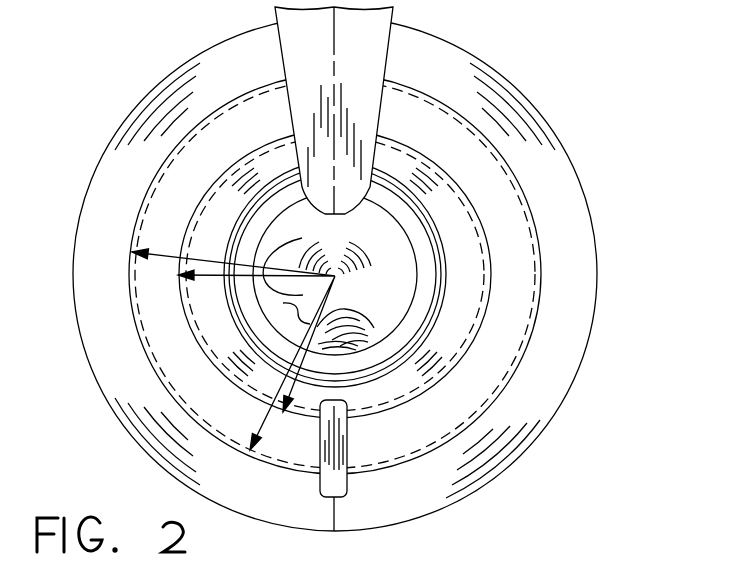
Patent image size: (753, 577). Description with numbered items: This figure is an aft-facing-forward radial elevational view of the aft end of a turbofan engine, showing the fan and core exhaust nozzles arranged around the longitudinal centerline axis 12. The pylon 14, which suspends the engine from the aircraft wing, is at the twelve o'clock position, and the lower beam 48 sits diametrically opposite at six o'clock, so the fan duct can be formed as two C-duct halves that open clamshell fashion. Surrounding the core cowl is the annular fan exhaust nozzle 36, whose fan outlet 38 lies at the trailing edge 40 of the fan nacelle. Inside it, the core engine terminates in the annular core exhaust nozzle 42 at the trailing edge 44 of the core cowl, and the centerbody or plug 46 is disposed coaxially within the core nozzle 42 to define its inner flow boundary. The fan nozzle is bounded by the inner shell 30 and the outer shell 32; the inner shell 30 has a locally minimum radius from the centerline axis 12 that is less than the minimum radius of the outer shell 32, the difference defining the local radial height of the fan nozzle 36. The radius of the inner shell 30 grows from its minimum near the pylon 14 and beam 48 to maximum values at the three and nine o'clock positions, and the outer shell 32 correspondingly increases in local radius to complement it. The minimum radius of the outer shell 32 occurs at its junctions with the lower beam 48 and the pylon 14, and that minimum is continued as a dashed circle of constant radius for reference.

The centerline axis 12 is at (334, 272).
The pylon 14 is at (334, 110).
The inner shell 30 is at (355, 274).
The outer shell 32 is at (335, 274).
The fan exhaust nozzle 36 is at (500, 240).
The fan outlet 38 is at (335, 130).
The trailing edge of the fan nacelle 40 is at (418, 96).
The core exhaust nozzle 42 is at (408, 327).
The trailing edge of the core cowl 44 is at (290, 191).
The centerbody or plug 46 is at (335, 274).
The lower beam 48 is at (348, 430).